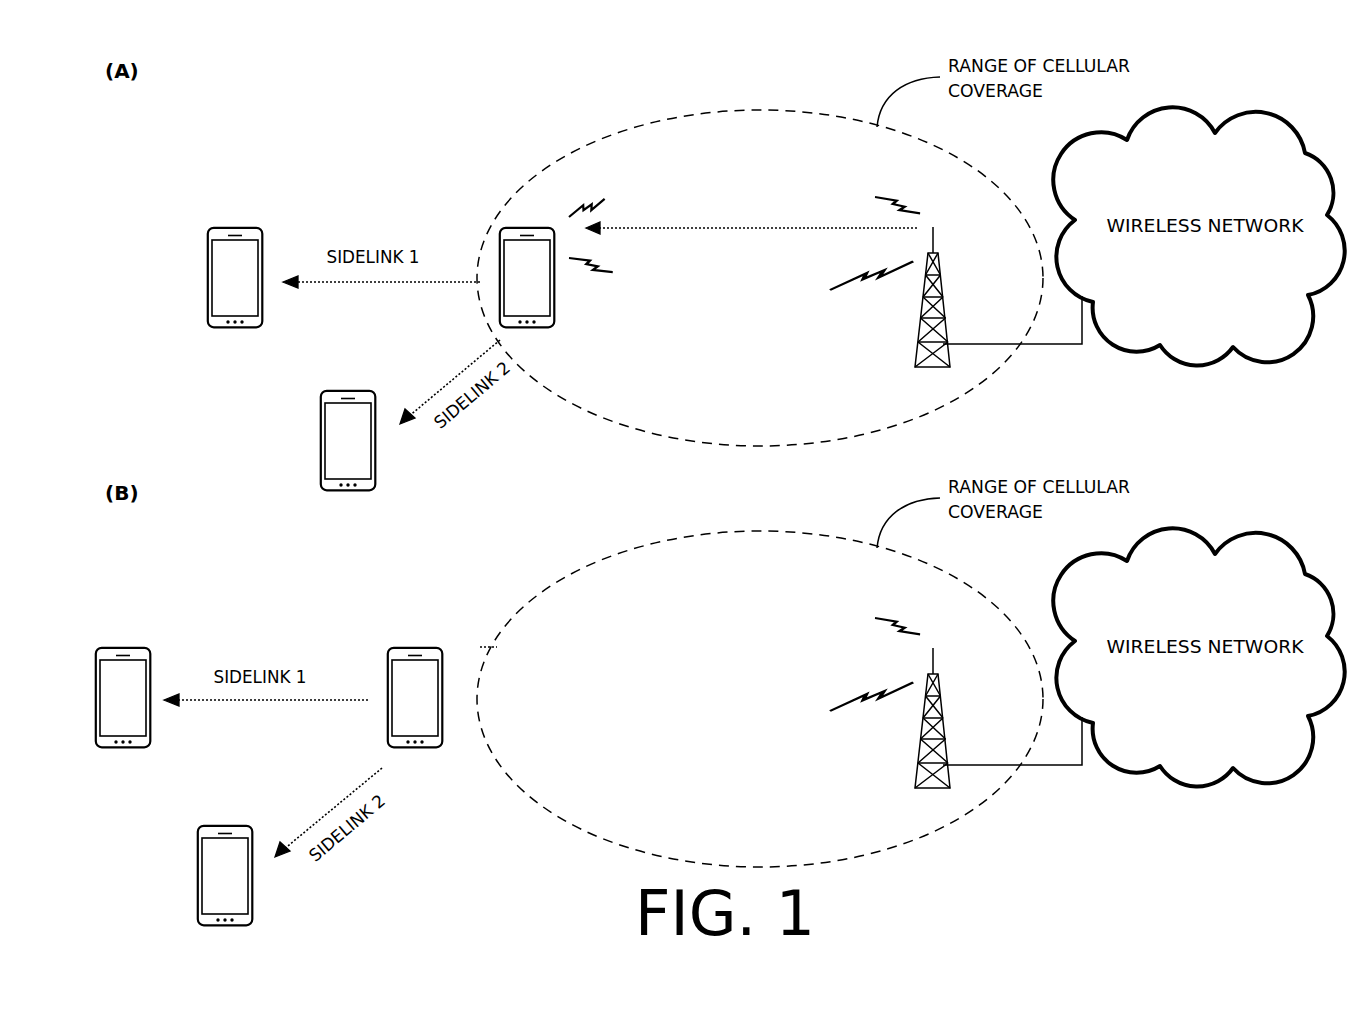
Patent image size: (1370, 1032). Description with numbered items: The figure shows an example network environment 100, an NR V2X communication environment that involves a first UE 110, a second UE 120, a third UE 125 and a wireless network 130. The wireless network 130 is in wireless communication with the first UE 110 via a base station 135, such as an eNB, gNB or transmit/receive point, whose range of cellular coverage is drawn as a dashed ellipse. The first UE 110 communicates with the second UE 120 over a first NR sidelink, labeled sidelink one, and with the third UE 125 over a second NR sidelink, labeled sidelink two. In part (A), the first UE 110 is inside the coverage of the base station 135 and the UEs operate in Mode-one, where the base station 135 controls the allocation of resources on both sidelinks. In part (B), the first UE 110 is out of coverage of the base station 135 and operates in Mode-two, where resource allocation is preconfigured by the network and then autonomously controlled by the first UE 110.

The network environment 100 is at (720, 63).
The first UE 110 is at (527, 227).
The second UE 120 is at (235, 227).
The third UE 125 is at (349, 390).
The wireless network 130 is at (1185, 264).
The base station 135 is at (943, 322).